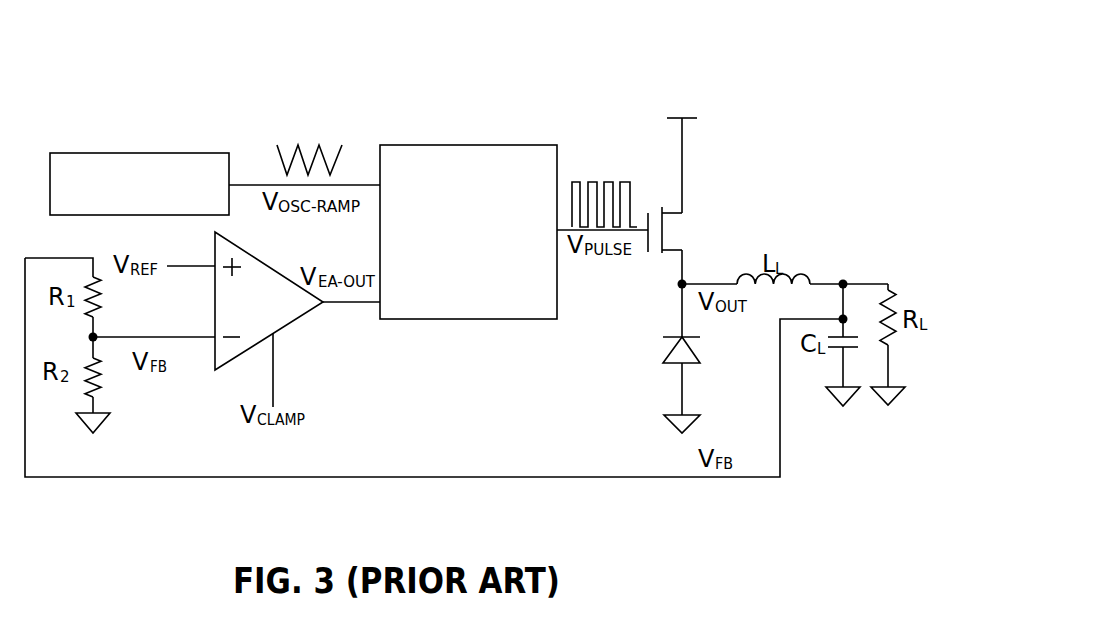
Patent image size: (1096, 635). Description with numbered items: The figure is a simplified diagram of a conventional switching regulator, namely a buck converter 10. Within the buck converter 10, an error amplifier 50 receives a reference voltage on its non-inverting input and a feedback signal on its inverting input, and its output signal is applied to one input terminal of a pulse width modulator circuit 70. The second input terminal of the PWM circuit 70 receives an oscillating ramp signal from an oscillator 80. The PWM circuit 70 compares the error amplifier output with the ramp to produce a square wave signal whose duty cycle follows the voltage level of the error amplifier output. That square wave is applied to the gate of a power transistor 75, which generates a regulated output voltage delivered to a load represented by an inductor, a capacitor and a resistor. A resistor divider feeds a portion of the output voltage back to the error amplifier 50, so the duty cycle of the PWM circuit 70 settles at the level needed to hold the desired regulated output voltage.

The buck converter 10 is at (686, 66).
The error amplifier 50 is at (273, 313).
The pulse width modulator circuit 70 is at (481, 297).
The power transistor 75 is at (648, 246).
The oscillator 80 is at (153, 210).